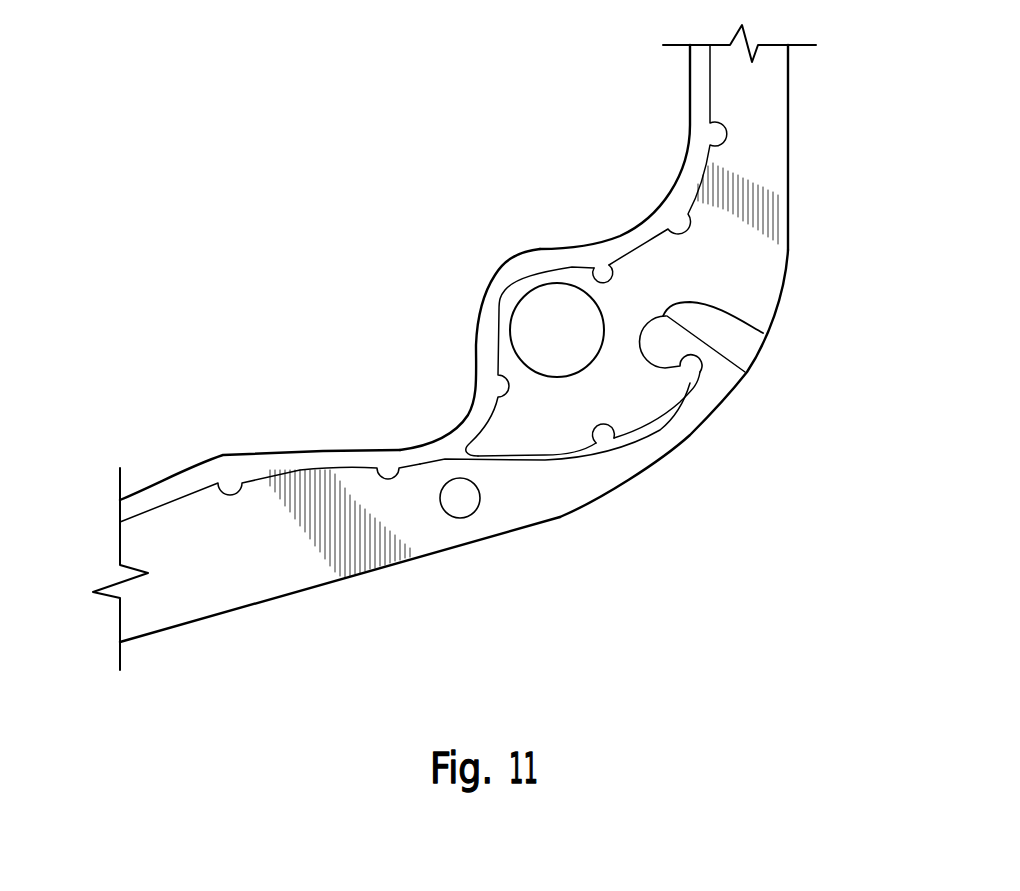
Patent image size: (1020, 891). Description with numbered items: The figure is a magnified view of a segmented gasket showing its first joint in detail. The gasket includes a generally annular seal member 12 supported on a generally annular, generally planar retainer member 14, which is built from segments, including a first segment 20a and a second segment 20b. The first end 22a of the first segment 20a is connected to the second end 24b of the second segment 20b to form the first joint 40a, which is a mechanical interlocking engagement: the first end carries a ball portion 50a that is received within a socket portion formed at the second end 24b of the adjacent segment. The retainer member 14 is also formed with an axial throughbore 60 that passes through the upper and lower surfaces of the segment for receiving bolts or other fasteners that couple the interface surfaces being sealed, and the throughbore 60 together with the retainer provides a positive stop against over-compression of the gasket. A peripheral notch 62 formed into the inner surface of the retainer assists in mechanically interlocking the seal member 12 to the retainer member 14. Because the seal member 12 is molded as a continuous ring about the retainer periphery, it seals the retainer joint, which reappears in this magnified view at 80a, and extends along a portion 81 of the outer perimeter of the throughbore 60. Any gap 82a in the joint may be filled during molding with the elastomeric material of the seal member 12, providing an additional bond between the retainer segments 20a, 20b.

The seal member 12 is at (153, 492).
The retainer member 14 is at (120, 625).
The first segment 20a is at (375, 570).
The second segment 20b is at (792, 160).
The first end 22a is at (717, 413).
The second end 24b is at (552, 266).
The first joint 40a is at (652, 525).
The ball portion 50a is at (763, 333).
The throughbore 60 is at (573, 338).
The peripheral notch 62 is at (598, 266).
The retainer joint 80a is at (378, 168).
The outer perimeter portion 81 is at (493, 284).
The joint gap 82a is at (541, 461).